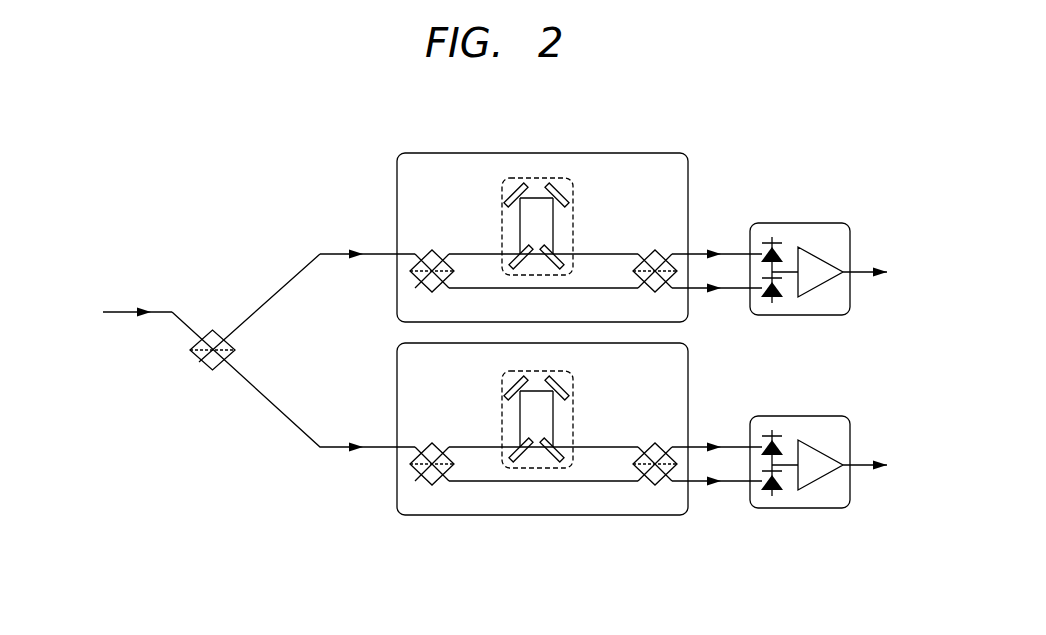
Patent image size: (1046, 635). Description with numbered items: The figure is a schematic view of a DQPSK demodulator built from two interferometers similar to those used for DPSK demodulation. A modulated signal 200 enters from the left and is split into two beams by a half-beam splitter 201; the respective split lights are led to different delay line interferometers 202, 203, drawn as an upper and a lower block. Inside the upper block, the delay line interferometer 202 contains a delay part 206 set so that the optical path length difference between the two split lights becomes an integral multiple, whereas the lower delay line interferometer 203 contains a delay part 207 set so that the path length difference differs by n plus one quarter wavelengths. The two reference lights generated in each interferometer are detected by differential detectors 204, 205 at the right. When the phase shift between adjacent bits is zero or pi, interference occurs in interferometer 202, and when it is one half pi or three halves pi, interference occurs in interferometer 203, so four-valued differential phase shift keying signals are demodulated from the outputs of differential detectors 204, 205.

The modulated signal 200 is at (120, 311).
The half-beam splitter 201 is at (214, 330).
The delay line interferometer 202 is at (440, 153).
The delay line interferometer 203 is at (429, 515).
The differential detector 204 is at (807, 223).
The differential detector 205 is at (807, 416).
The delay part 206 is at (555, 178).
The delay part 207 is at (553, 469).